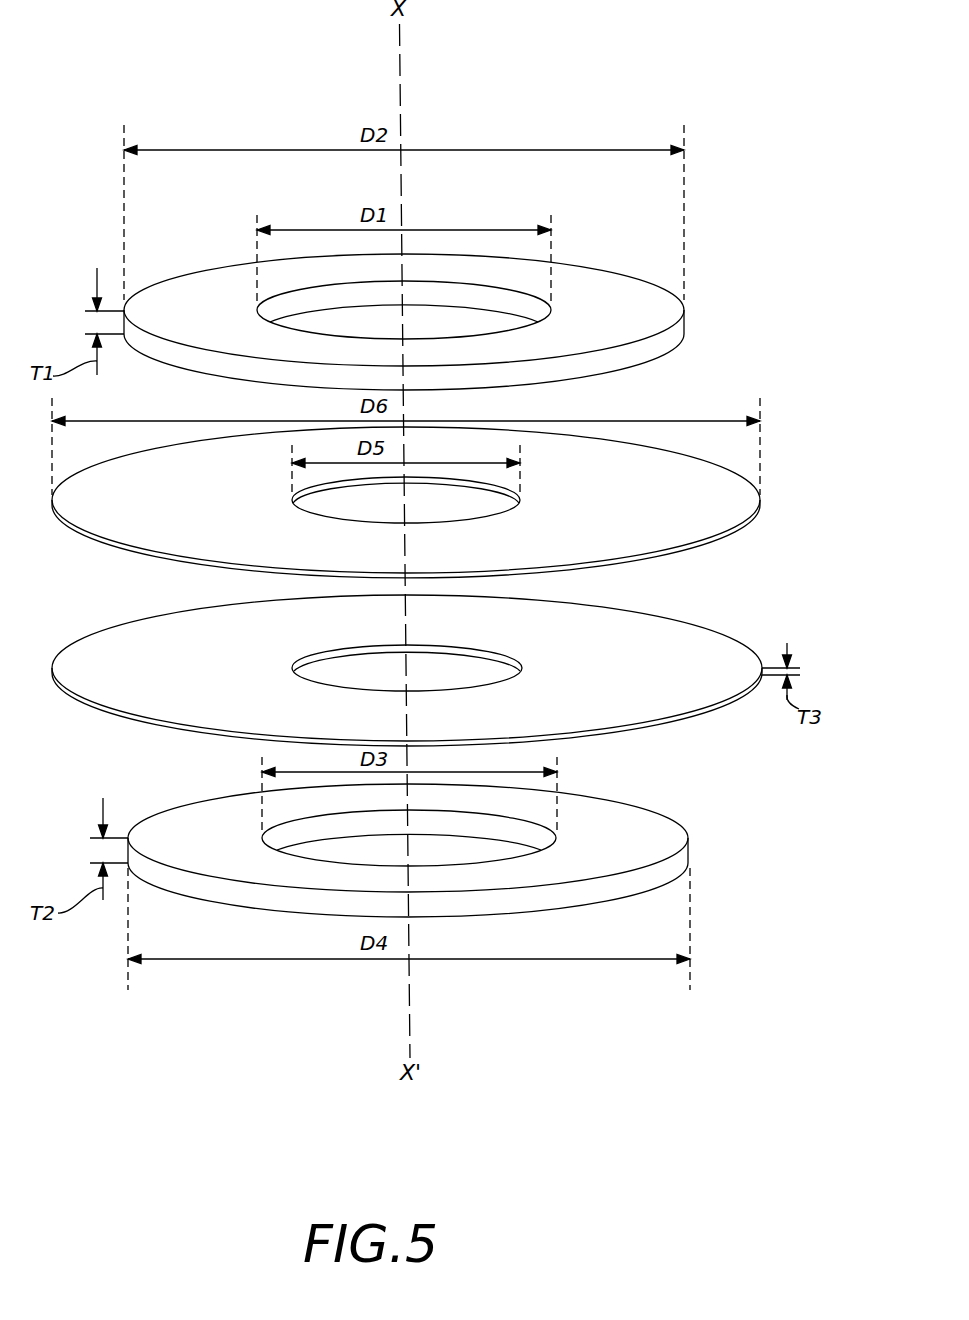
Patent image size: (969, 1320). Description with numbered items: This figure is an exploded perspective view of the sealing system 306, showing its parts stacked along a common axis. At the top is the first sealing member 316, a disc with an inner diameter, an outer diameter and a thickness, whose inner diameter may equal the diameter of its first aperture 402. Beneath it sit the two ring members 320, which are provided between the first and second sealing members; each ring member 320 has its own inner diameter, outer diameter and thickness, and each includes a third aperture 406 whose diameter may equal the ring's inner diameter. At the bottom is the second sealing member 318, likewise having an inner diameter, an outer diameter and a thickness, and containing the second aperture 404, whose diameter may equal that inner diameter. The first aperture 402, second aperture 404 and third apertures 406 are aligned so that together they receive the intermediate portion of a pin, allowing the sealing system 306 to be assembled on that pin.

The sealing system 306 is at (209, 48).
The first sealing member 316 is at (700, 287).
The first aperture 402 is at (423, 318).
The ring members 320 is at (763, 534).
The third aperture 406 is at (352, 508).
The second sealing member 318 is at (703, 868).
The second aperture 404 is at (358, 848).